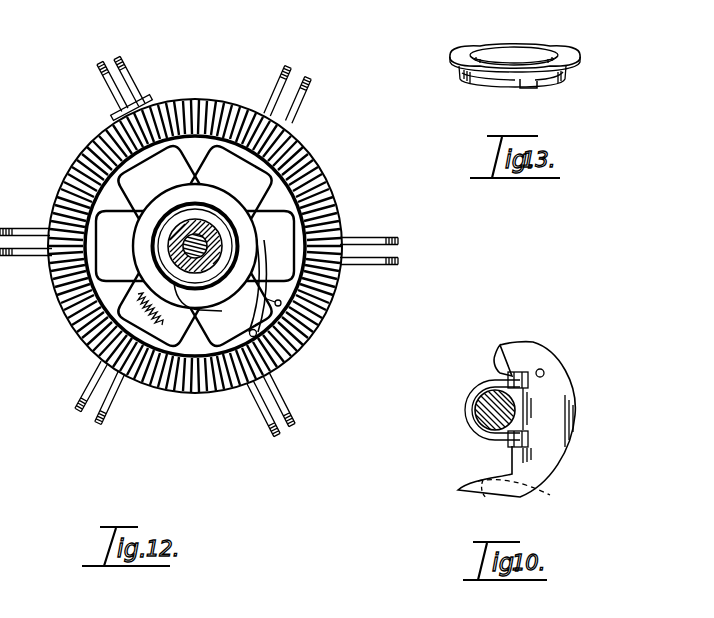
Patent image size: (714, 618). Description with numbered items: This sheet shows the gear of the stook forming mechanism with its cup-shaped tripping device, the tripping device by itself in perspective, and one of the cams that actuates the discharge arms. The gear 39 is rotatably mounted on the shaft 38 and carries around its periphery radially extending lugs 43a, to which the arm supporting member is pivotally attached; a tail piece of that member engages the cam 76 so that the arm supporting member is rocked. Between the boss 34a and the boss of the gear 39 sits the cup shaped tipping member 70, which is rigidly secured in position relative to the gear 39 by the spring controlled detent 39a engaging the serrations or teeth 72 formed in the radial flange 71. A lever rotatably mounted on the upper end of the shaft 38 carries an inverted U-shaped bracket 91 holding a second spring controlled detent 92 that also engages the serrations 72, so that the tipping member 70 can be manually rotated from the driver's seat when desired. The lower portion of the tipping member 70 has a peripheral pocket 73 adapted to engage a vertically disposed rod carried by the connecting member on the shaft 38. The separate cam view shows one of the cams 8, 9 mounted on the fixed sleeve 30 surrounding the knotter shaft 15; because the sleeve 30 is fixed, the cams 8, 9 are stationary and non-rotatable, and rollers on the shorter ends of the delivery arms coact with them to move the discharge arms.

In FIG. 12, the gear 39 is at (212, 103).
In FIG. 12, the peripheral radially extending lugs 43a is at (316, 75).
In FIG. 12, the cam 76 is at (137, 105).
In FIG. 12, the serrations or teeth 72 is at (165, 193).
In FIG. 13, the serrations or teeth 72 is at (457, 48).
In FIG. 12, the cup shaped tipping member 70 is at (215, 212).
In FIG. 13, the cup shaped tipping member 70 is at (518, 50).
In FIG. 12, the radial flange 71 is at (138, 247).
In FIG. 13, the radial flange 71 is at (476, 46).
In FIG. 12, the spring controlled detent 92 is at (157, 311).
In FIG. 12, the shaft 38 is at (208, 328).
In FIG. 12, the inverted U-shaped bracket 91 is at (129, 295).
In FIG. 12, the boss 34a is at (228, 234).
In FIG. 12, the spring controlled detent 39a is at (265, 268).
In FIG. 13, the peripheral pocket 73 is at (531, 86).
In FIG. 10, the cam 8 is at (547, 378).
In FIG. 10, the cam 9 is at (525, 496).
In FIG. 10, the knotter shaft 15 is at (503, 395).
In FIG. 10, the fixed sleeve 30 is at (486, 430).